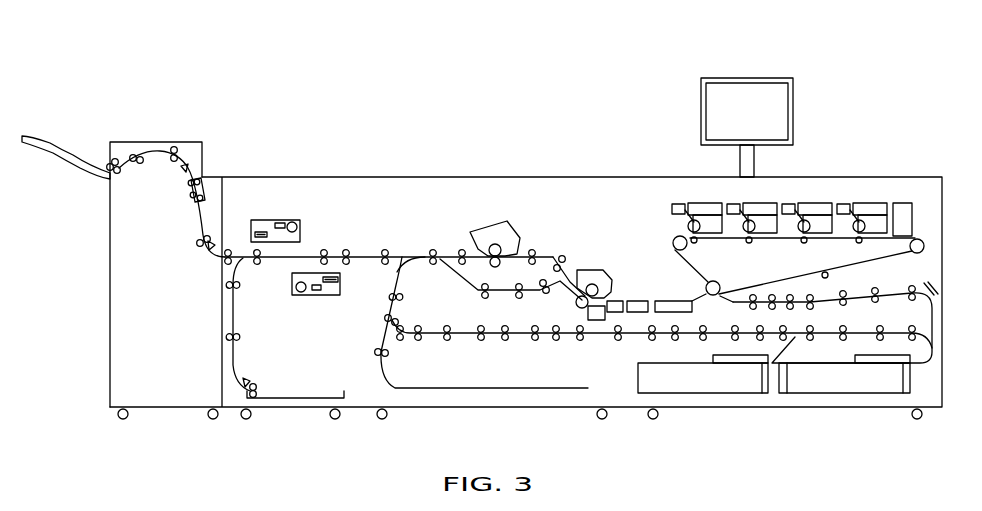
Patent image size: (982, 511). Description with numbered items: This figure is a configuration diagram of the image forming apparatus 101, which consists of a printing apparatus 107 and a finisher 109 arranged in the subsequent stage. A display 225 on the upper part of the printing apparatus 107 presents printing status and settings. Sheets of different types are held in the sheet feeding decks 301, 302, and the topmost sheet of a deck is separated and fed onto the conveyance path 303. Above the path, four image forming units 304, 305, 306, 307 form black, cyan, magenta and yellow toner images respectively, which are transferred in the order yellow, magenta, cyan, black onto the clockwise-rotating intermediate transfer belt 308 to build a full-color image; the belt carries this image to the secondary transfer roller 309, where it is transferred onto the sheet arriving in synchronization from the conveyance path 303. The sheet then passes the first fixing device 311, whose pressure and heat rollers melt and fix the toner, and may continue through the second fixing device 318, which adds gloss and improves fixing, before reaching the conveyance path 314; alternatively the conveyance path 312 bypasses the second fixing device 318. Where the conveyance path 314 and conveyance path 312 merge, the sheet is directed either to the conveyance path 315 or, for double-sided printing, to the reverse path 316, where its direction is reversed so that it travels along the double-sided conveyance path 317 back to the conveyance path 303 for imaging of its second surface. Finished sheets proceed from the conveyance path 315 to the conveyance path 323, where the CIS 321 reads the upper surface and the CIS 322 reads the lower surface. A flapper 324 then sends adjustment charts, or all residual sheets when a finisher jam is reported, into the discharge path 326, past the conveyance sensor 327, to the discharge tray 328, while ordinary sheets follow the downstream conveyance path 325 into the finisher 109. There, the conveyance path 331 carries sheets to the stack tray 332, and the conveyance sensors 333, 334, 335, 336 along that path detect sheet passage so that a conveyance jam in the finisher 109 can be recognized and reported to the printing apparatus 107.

The image forming apparatus 101 is at (562, 61).
The printing apparatus 107 is at (563, 177).
The finisher 109 is at (185, 142).
The display 225 is at (793, 100).
The sheet feeding deck 301 is at (718, 395).
The sheet feeding deck 302 is at (852, 395).
The conveyance path 303 is at (880, 297).
The image forming unit 304 is at (877, 202).
The image forming unit 305 is at (822, 202).
The image forming unit 306 is at (767, 202).
The image forming unit 307 is at (702, 202).
The intermediate transfer belt 308 is at (800, 281).
The secondary transfer roller 309 is at (716, 280).
The first fixing device 311 is at (592, 268).
The conveyance path 312 is at (463, 279).
The conveyance path 314 is at (456, 254).
The conveyance path 315 is at (405, 250).
The reverse path 316 is at (392, 303).
The double-sided conveyance path 317 is at (604, 341).
The second fixing device 318 is at (498, 224).
The CIS 321 is at (295, 222).
The CIS 322 is at (320, 296).
The conveyance path 323 is at (338, 252).
The flapper 324 is at (243, 262).
The downstream conveyance path 325 is at (232, 248).
The discharge path 326 is at (234, 353).
The conveyance sensor 327 is at (250, 378).
The discharge tray 328 is at (322, 398).
The conveyance path 331 is at (167, 164).
The stack tray 332 is at (80, 132).
The conveyance sensor 333 is at (206, 258).
The conveyance sensor 334 is at (195, 200).
The conveyance sensor 335 is at (185, 172).
The conveyance sensor 336 is at (116, 160).